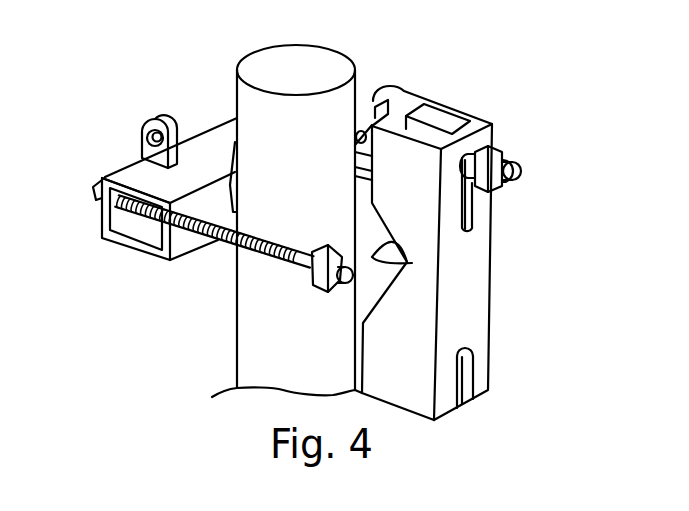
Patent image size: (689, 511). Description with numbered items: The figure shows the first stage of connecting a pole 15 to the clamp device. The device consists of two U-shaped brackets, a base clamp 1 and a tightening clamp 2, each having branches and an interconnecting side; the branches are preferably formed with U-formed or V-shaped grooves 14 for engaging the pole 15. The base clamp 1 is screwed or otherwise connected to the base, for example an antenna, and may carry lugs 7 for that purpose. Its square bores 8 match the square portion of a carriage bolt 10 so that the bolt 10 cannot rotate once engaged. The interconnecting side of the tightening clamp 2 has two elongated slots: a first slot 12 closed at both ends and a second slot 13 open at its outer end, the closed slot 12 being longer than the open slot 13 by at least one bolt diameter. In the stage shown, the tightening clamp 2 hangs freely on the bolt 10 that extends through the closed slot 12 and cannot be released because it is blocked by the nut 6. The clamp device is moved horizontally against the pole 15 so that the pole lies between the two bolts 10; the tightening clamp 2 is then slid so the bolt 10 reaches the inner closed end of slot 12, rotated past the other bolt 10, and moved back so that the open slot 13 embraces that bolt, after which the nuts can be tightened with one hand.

The base clamp 1 is at (212, 142).
The tightening clamp 2 is at (472, 303).
The nut 6 is at (502, 148).
The lug 7 is at (148, 152).
The bore 8 is at (104, 226).
The carriage bolt 10 is at (410, 91).
The first slot 12 is at (467, 211).
The second slot 13 is at (455, 357).
The groove 14 is at (372, 257).
The pole 15 is at (325, 107).